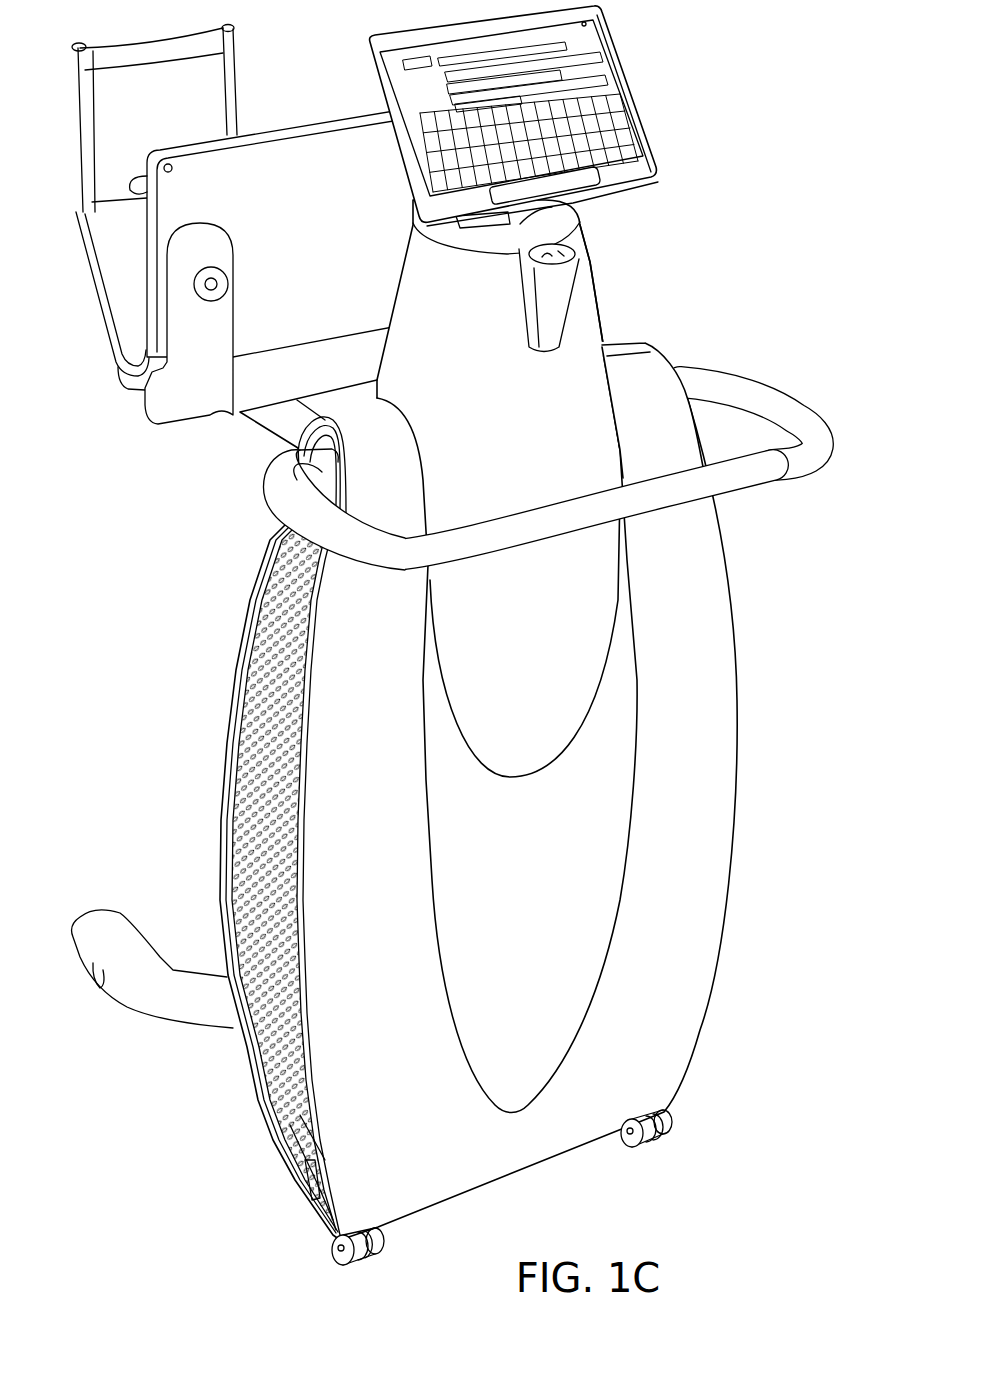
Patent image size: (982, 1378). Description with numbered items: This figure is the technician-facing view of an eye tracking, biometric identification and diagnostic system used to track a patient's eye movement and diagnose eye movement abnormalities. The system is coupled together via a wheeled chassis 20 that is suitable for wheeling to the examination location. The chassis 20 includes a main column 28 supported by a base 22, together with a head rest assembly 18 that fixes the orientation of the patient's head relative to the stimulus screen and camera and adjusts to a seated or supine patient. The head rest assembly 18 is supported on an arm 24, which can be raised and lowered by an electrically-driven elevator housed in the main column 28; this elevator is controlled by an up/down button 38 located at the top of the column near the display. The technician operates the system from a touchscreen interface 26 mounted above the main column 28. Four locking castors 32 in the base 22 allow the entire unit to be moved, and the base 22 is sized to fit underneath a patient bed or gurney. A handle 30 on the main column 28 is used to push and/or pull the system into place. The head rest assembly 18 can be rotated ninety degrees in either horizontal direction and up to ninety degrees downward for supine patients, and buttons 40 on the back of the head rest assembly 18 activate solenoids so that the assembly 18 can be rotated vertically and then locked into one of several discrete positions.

The head rest assembly 18 is at (167, 412).
The wheeled chassis 20 is at (725, 830).
The base 22 is at (167, 1013).
The arm 24 is at (285, 433).
The touchscreen interface 26 is at (640, 102).
The main column 28 is at (245, 757).
The handle 30 is at (770, 495).
The locking castors 32 is at (383, 1243).
The up/down button 38 is at (575, 249).
The buttons 40 is at (194, 286).